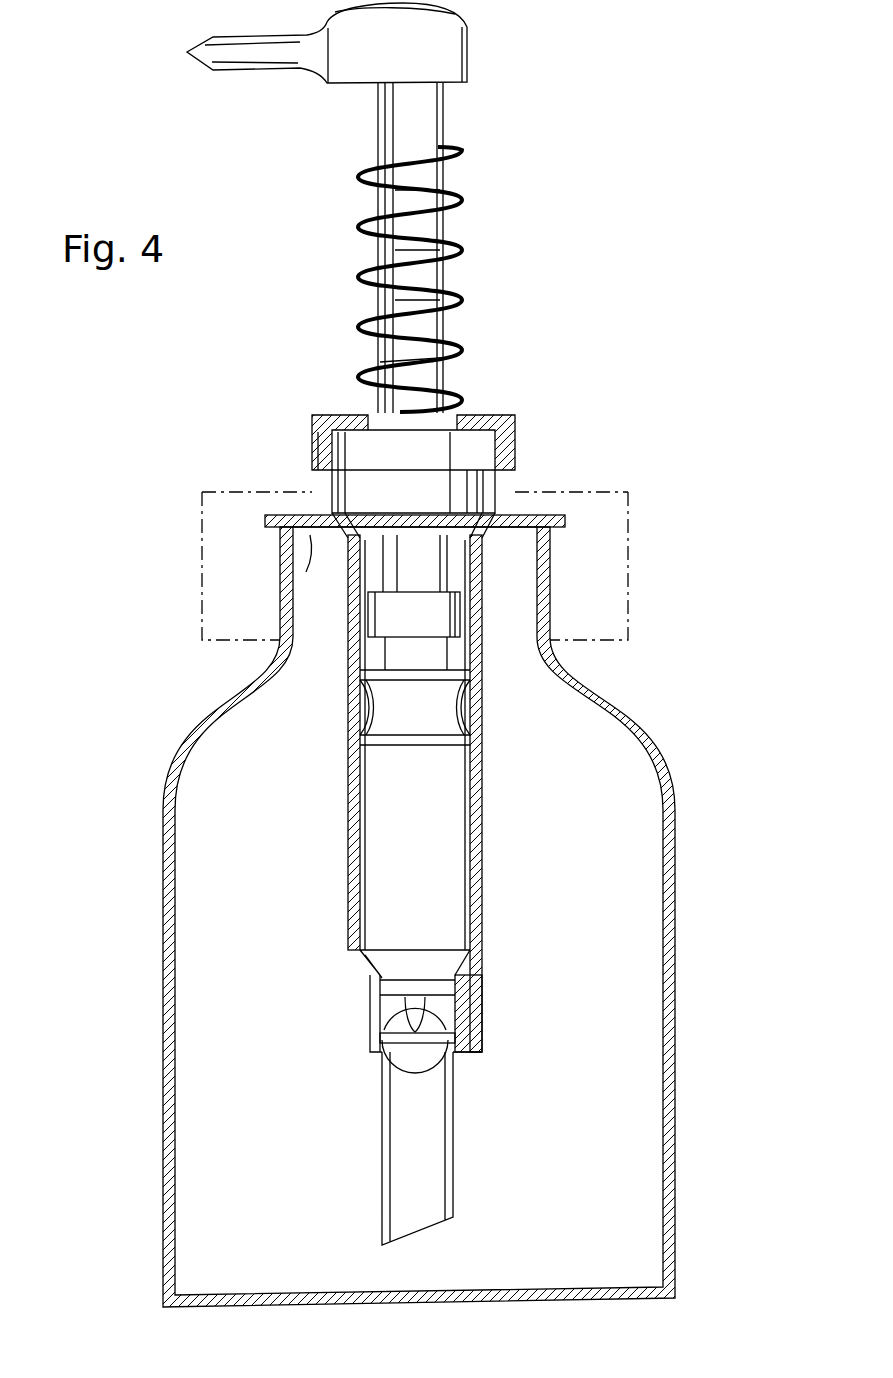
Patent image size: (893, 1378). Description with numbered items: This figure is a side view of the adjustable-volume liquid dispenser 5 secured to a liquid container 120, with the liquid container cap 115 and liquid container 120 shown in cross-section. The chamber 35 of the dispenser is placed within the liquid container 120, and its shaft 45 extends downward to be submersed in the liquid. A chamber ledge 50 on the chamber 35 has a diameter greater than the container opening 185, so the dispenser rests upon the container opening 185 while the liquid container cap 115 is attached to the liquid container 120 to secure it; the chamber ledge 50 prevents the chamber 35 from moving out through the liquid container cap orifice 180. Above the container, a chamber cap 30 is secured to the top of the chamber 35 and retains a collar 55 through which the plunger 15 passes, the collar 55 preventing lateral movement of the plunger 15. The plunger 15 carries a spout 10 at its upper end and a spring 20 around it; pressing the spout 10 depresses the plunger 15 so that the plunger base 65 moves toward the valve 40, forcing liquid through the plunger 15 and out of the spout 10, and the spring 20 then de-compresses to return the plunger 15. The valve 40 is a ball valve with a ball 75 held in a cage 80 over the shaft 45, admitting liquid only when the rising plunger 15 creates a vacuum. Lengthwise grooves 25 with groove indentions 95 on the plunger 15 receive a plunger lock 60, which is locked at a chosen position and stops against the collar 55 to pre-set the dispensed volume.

The adjustable-volume liquid dispenser 5 is at (578, 96).
The spout 10 is at (470, 45).
The plunger 15 is at (417, 185).
The spring 20 is at (465, 200).
The grooves 25 is at (378, 133).
The chamber cap 30 is at (516, 448).
The chamber 35 is at (485, 850).
The valve 40 is at (485, 1003).
The shaft 45 is at (455, 1165).
The chamber ledge 50 is at (268, 522).
The collar 55 is at (450, 497).
The plunger lock 60 is at (425, 620).
The plunger base 65 is at (398, 706).
The ball 75 is at (427, 1058).
The cage 80 is at (388, 990).
The groove indentions 95 is at (392, 357).
The liquid container cap 115 is at (202, 552).
The liquid container 120 is at (676, 997).
The liquid container cap orifice 180 is at (320, 485).
The container opening 185 is at (310, 540).